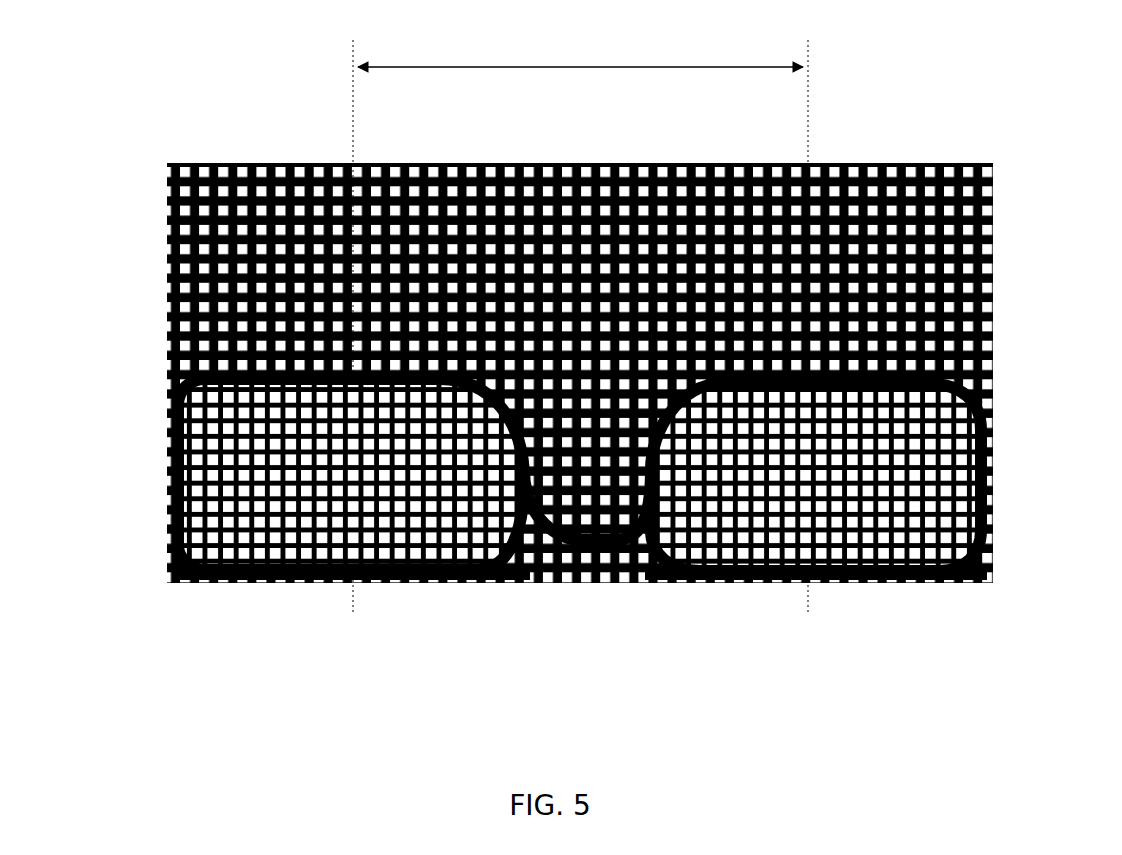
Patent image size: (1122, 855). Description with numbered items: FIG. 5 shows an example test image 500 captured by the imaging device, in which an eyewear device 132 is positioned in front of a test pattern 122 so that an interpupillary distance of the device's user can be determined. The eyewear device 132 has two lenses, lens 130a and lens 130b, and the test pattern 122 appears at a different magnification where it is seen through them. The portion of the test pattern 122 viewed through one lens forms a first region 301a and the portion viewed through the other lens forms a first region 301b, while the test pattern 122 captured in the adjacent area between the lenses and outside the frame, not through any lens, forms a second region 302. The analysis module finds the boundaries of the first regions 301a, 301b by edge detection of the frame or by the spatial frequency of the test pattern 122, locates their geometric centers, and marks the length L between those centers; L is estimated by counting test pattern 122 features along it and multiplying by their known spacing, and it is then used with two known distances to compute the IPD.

The test image 500 is at (116, 72).
The test pattern 122 is at (998, 190).
The eyewear device 132 is at (321, 584).
The lens 130a is at (862, 583).
The lens 130b is at (392, 583).
The first region 301a is at (934, 585).
The first region 301b is at (170, 568).
The second region 302 is at (627, 590).